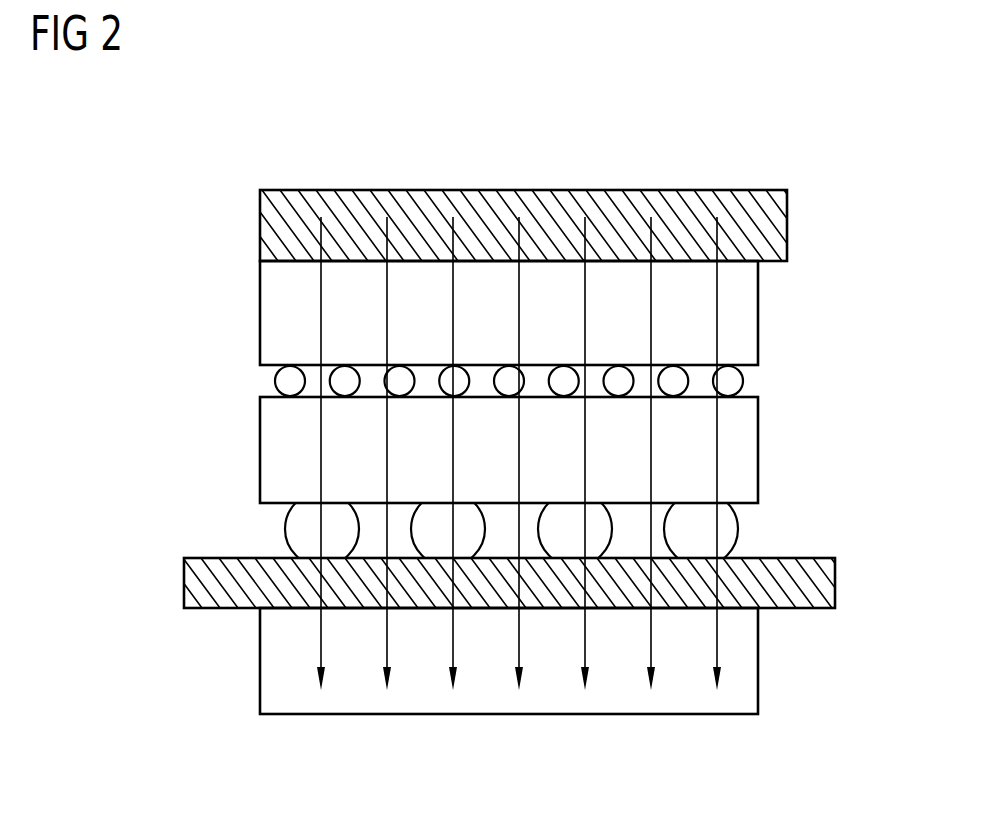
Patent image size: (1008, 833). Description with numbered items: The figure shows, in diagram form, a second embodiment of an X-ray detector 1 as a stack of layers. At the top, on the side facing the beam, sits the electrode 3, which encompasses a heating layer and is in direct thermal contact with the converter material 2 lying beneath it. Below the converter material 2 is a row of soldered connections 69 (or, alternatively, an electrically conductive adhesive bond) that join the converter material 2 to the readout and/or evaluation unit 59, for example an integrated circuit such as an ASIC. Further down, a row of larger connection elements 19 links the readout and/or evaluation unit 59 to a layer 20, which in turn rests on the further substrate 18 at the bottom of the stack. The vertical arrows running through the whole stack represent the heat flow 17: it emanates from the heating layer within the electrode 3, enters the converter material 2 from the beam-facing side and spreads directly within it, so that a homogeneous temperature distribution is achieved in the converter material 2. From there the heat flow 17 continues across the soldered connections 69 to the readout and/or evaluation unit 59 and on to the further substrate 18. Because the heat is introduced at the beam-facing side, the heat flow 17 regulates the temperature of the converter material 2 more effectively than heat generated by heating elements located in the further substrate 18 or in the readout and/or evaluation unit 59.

The X-ray detector 1 is at (165, 217).
The converter material 2 is at (742, 312).
The electrode 3 is at (777, 225).
The heat flow 17 is at (587, 674).
The further substrate 18 is at (743, 658).
The solder balls 19 is at (720, 532).
The metallization layer 20 is at (822, 583).
The readout and/or evaluation unit 59 is at (742, 449).
The soldered connections 69 is at (728, 383).